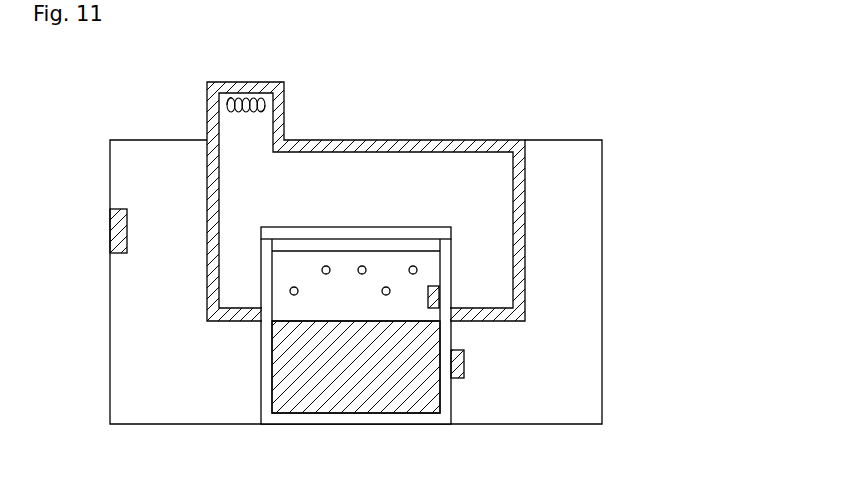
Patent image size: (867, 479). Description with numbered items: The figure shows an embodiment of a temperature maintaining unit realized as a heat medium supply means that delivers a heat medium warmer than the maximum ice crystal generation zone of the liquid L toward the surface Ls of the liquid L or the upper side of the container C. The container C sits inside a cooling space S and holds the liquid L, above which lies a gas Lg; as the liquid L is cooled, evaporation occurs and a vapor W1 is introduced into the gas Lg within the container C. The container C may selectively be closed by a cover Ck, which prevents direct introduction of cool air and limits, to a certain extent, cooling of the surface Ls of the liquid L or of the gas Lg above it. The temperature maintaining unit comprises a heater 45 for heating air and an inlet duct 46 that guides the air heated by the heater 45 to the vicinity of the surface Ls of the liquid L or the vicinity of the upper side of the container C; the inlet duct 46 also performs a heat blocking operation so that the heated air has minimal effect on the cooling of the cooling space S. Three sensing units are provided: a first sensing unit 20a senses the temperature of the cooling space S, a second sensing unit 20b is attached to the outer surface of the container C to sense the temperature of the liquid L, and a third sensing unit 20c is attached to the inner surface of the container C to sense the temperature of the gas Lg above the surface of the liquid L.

The heater 45 is at (249, 98).
The inlet duct 46 is at (497, 143).
The first sensing unit 20a is at (110, 230).
The second sensing unit 20b is at (465, 368).
The third sensing unit 20c is at (440, 295).
The vapor W1 is at (413, 266).
The cover Ck is at (441, 227).
The surface of the liquid Ls is at (288, 321).
The gas Lg is at (356, 277).
The liquid L is at (318, 387).
The container C is at (449, 387).
The cooling space S is at (356, 282).